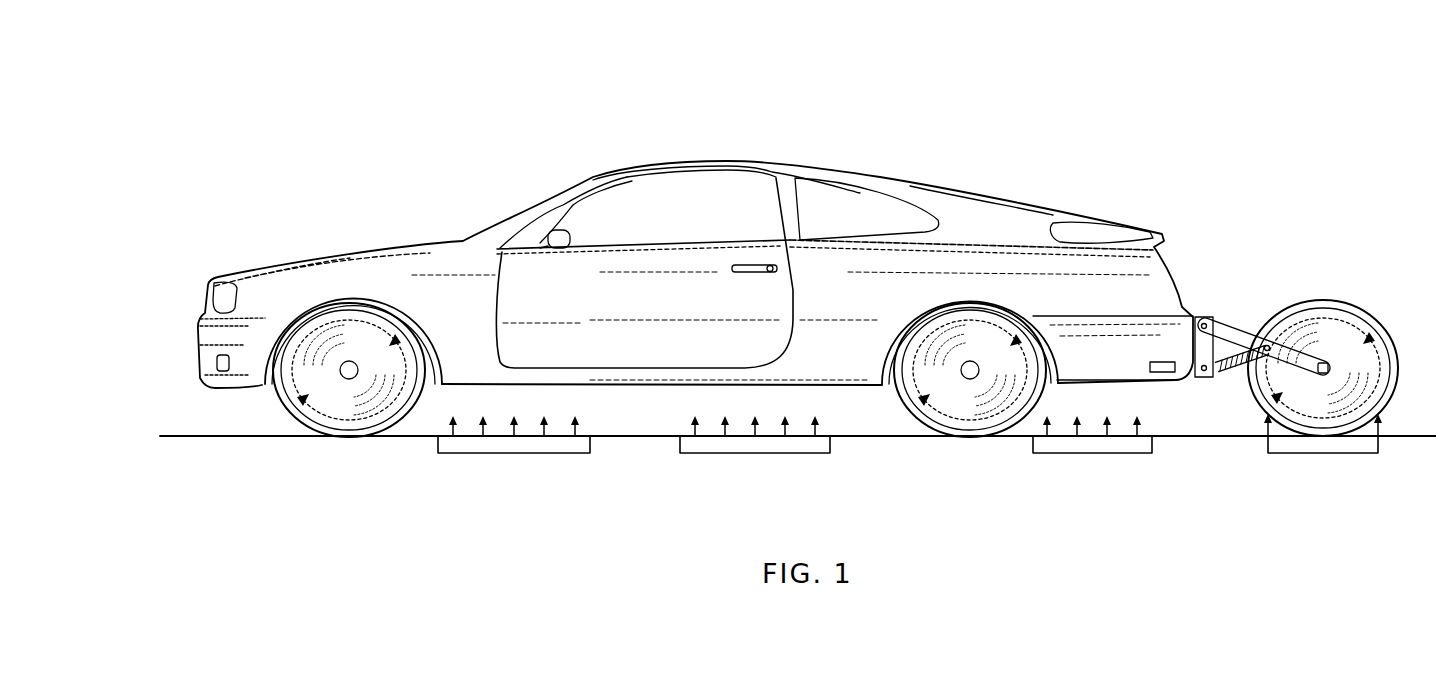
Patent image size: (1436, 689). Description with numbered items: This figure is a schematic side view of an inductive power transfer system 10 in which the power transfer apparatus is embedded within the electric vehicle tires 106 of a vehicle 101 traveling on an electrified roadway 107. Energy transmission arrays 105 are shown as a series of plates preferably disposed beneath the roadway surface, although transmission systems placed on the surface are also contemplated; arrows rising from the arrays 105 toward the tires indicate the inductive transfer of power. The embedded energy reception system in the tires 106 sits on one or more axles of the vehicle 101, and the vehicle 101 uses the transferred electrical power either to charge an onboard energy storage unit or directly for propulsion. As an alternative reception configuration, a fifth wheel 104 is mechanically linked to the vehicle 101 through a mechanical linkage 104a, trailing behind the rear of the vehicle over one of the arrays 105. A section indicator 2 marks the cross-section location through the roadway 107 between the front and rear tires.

The vehicle testing system 10 is at (386, 78).
The vehicle 101 is at (428, 242).
The fifth wheel 104 is at (1343, 330).
The mechanical linkage 104a is at (1278, 373).
The energy transmission arrays 105 is at (465, 454).
The electric vehicle tires 106 is at (307, 430).
The electrified roadway 107 is at (193, 438).
The section line for FIG. 2 is at (605, 405).